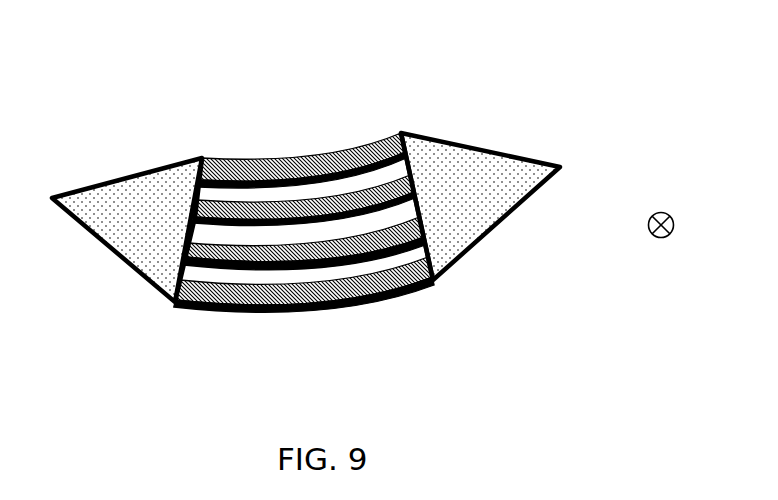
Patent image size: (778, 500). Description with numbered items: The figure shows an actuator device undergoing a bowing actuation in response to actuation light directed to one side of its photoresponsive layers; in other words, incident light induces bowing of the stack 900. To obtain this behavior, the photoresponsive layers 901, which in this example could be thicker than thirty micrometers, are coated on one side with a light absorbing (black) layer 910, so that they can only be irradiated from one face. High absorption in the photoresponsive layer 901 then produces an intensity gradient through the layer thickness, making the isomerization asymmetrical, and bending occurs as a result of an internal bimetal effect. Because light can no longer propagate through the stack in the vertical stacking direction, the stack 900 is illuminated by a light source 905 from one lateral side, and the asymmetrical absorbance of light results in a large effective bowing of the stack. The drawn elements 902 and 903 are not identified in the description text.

The stack 900 is at (378, 225).
The photoresponsive layers 901 is at (304, 179).
The layer 902 is at (268, 190).
The end portion 903 is at (475, 167).
The light source 905 is at (673, 216).
The light absorbing (black) layer 910 is at (307, 265).